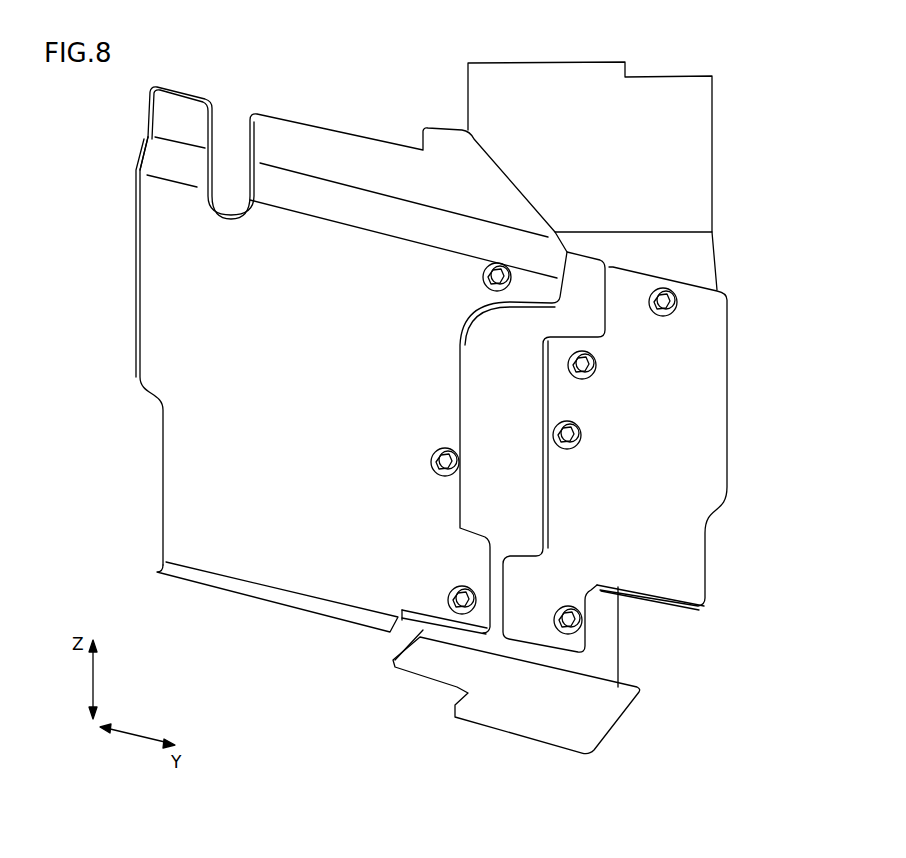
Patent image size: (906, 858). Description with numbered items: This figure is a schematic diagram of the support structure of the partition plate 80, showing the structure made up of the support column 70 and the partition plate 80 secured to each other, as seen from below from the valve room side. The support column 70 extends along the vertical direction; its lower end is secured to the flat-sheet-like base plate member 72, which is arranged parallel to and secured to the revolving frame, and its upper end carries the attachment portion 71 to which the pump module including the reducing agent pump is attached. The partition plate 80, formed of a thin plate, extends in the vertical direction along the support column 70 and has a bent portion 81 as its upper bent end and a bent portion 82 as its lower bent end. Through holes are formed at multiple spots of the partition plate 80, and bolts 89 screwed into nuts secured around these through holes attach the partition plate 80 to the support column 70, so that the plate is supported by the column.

The support column 70 is at (603, 650).
The attachment portion 71 is at (695, 137).
The base plate member 72 is at (597, 720).
The partition plate 80 is at (214, 477).
The bent portion 81 is at (342, 158).
The bent portion 82 is at (220, 583).
The bolts 89 is at (680, 300).